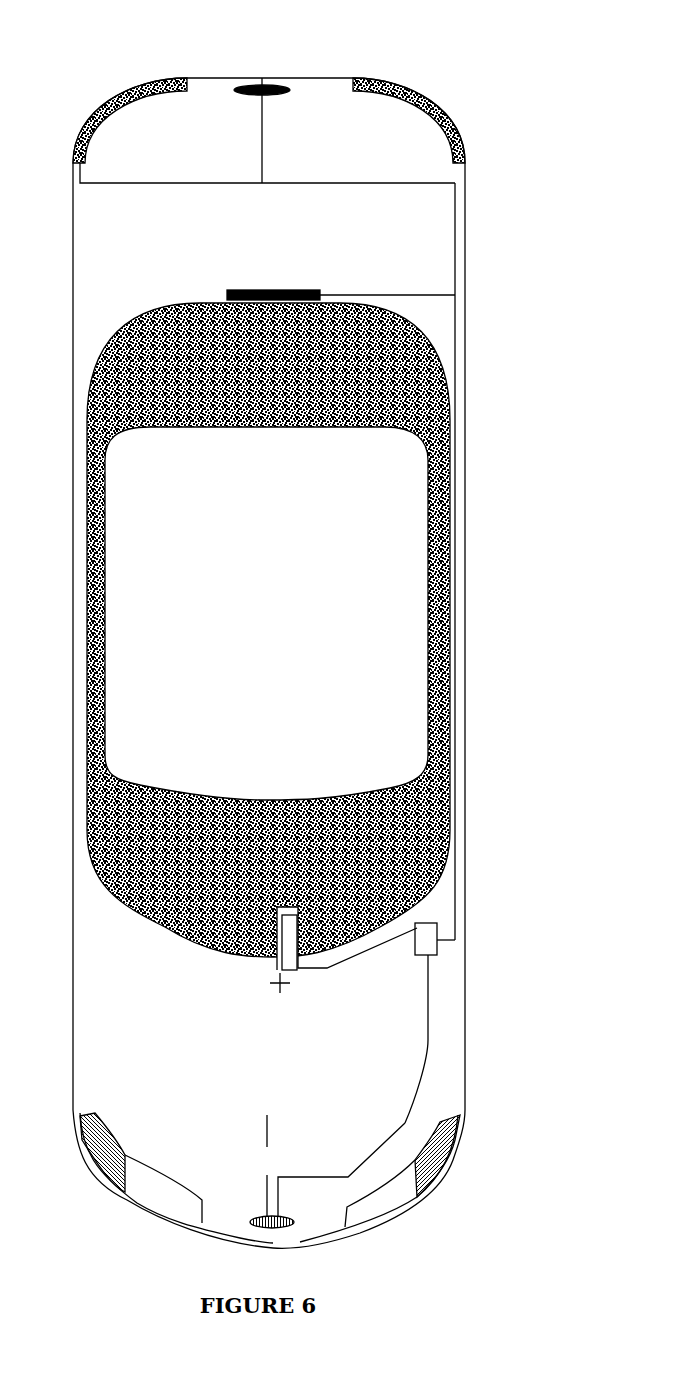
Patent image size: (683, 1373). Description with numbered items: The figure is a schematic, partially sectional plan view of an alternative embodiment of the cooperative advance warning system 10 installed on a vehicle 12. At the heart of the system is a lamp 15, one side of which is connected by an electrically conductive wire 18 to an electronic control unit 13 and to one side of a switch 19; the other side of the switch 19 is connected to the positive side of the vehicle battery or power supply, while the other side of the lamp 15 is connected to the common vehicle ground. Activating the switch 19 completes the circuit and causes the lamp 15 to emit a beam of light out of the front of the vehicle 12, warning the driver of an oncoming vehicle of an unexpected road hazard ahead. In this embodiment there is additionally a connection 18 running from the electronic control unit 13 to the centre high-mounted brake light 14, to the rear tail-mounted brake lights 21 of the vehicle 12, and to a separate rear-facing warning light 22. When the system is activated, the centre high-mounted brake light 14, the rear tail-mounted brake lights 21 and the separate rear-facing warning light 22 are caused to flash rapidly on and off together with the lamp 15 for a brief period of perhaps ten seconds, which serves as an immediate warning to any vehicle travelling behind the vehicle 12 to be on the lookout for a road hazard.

The cooperative advance warning system 10 is at (315, 1202).
The vehicle 12 is at (252, 746).
The electronic control unit 13 is at (413, 948).
The centre high-mounted brake light 14 is at (252, 290).
The lamp 15 is at (262, 1230).
The electrically conductive wire 18 is at (463, 893).
The switch 19 is at (272, 928).
The rear tail-mounted brake lights 21 is at (112, 95).
The separate rear-facing warning light 22 is at (262, 85).